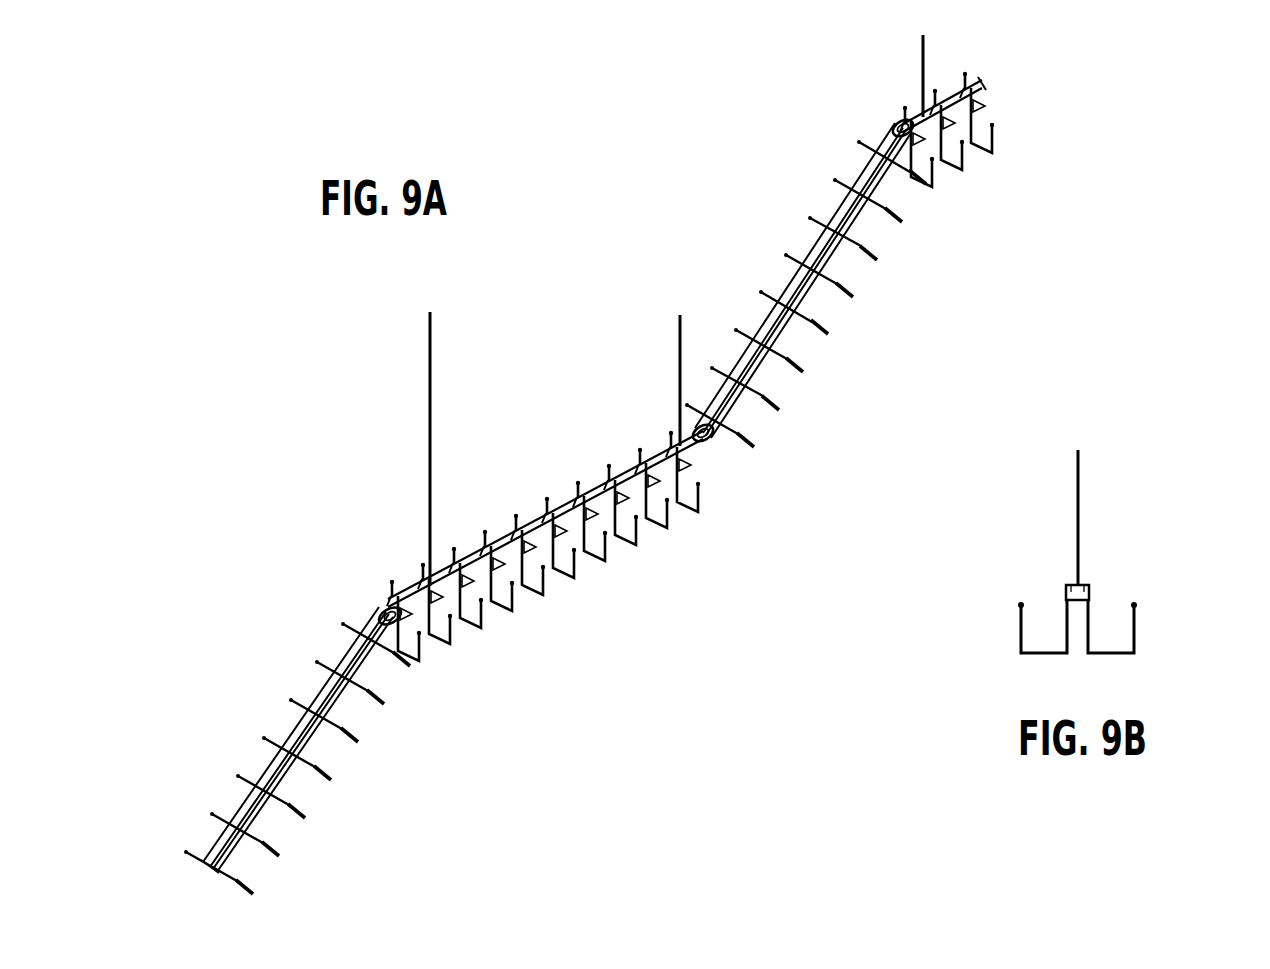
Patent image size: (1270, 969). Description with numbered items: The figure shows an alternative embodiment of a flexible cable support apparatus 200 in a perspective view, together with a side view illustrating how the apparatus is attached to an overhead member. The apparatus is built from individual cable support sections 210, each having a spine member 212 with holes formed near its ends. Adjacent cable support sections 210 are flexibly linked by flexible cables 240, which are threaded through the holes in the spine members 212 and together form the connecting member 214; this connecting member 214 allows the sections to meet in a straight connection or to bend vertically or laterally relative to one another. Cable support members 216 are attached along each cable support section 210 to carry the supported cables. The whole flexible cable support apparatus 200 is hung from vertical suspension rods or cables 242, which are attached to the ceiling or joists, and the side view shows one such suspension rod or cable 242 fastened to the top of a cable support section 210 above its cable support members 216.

In FIG. 9A, the flexible cable support apparatus 200 is at (575, 393).
In FIG. 9A, the cable support section 210 is at (757, 245).
In FIG. 9B, the cable support section 210 is at (1123, 573).
In FIG. 9A, the spine member 212 is at (837, 207).
In FIG. 9A, the connecting member 214 is at (712, 456).
In FIG. 9A, the cable support member 216 is at (850, 297).
In FIG. 9B, the cable support member 216 is at (1136, 628).
In FIG. 9A, the flexible cable 240 is at (714, 437).
In FIG. 9A, the vertical suspension rod or cable 242 is at (428, 378).
In FIG. 9B, the vertical suspension rod or cable 242 is at (1082, 478).